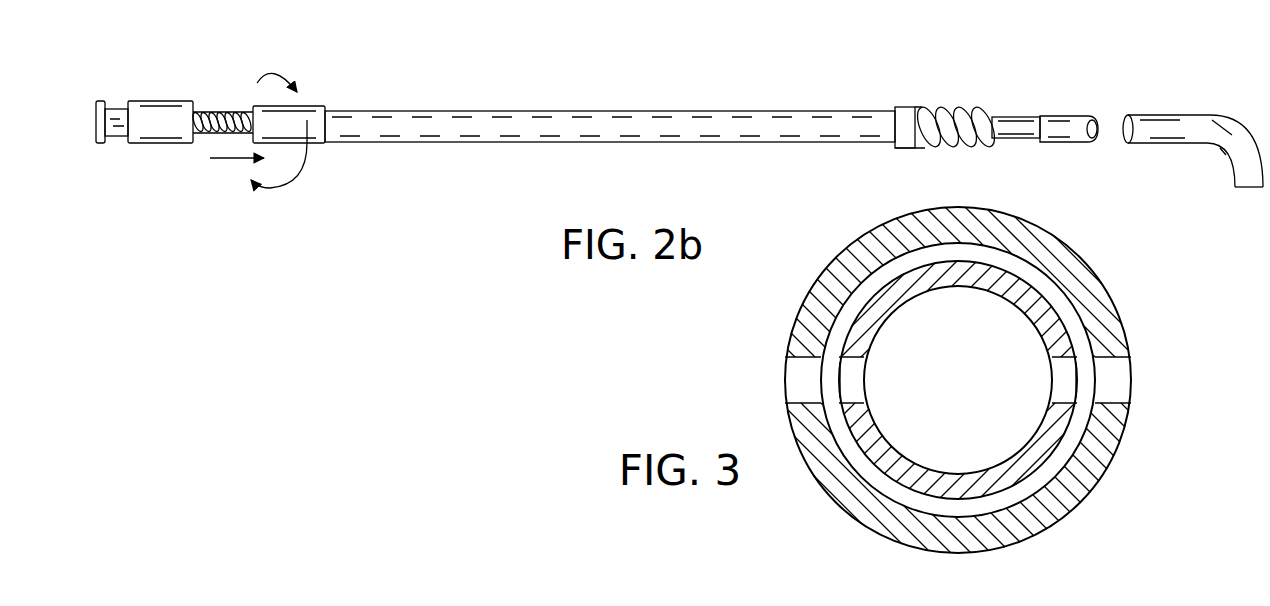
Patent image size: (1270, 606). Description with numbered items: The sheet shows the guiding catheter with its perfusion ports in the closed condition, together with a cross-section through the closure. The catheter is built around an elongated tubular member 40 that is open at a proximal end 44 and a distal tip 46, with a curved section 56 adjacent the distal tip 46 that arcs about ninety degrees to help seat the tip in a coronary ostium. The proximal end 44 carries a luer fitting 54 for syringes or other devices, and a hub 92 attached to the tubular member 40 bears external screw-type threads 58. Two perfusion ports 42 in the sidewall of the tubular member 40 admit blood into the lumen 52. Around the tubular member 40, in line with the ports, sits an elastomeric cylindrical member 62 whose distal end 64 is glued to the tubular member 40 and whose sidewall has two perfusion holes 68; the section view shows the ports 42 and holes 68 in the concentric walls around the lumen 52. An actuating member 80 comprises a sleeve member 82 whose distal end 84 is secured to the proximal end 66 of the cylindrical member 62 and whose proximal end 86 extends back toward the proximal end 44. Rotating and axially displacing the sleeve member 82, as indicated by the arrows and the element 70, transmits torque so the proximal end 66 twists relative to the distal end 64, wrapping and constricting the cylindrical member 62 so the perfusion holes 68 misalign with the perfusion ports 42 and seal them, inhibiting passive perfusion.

In FIG. 2b, the tubular member 40 is at (1066, 106).
In FIG. 3, the tubular member 40 is at (1023, 305).
In FIG. 3, the perfusion ports 42 is at (852, 375).
In FIG. 2b, the proximal end 44 is at (93, 127).
In FIG. 2b, the distal tip 46 is at (1253, 188).
In FIG. 3, the lumen 52 is at (944, 392).
In FIG. 2b, the luer fitting 54 is at (100, 145).
In FIG. 2b, the curved section 56 is at (1235, 127).
In FIG. 2b, the external screw-type threads 58 is at (222, 112).
In FIG. 2b, the cylindrical member 62 is at (913, 107).
In FIG. 3, the cylindrical member 62 is at (1105, 295).
In FIG. 2b, the distal end of cylindrical member 64 is at (985, 145).
In FIG. 2b, the proximal end of cylindrical member 66 is at (908, 152).
In FIG. 3, the perfusion holes 68 is at (798, 378).
In FIG. 2b, the pin 70 is at (317, 145).
In FIG. 2b, the actuating member 80 is at (610, 123).
In FIG. 2b, the sleeve member 82 is at (585, 111).
In FIG. 2b, the distal end of sleeve member 84 is at (895, 107).
In FIG. 2b, the proximal end of sleeve member 86 is at (322, 105).
In FIG. 2b, the hub 92 is at (163, 101).